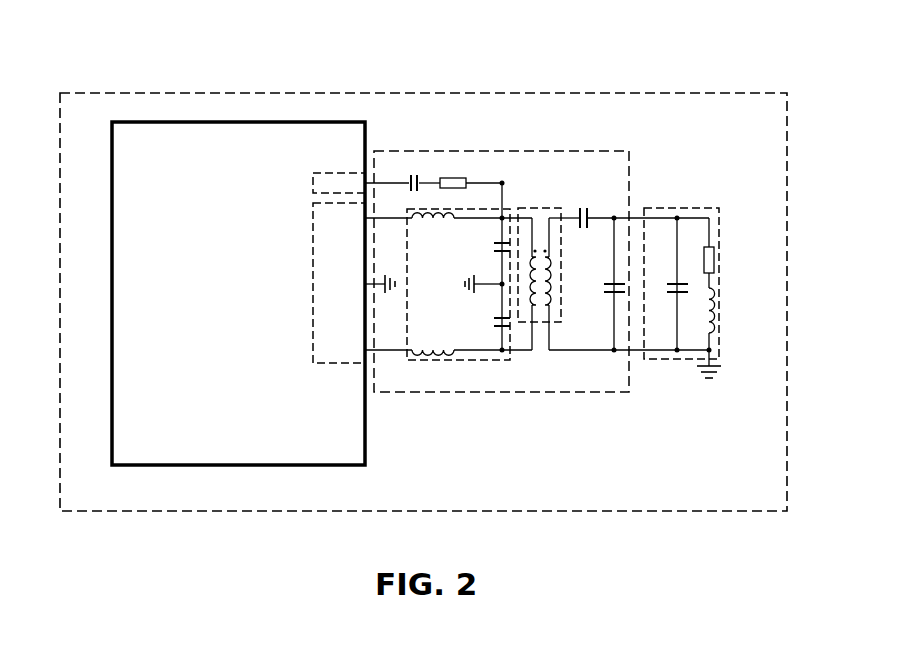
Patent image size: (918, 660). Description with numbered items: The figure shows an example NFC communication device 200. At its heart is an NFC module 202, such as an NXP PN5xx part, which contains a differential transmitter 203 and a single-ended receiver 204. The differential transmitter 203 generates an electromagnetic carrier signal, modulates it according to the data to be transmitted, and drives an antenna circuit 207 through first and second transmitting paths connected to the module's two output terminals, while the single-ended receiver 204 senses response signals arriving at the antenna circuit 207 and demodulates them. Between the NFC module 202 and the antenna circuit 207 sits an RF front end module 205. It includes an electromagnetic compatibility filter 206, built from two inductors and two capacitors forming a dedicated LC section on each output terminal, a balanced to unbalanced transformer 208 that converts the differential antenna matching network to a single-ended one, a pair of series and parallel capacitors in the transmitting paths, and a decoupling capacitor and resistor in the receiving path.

The NFC communication device 200 is at (559, 92).
The NFC module 202 is at (110, 219).
The differential transmitter 203 is at (311, 262).
The single-ended receiver 204 is at (312, 172).
The RF front end module 205 is at (537, 263).
The electromagnetic compatibility (EMC) filter 206 is at (474, 364).
The antenna circuit 207 is at (721, 206).
The balanced to unbalanced (Balun) transformer 208 is at (546, 205).